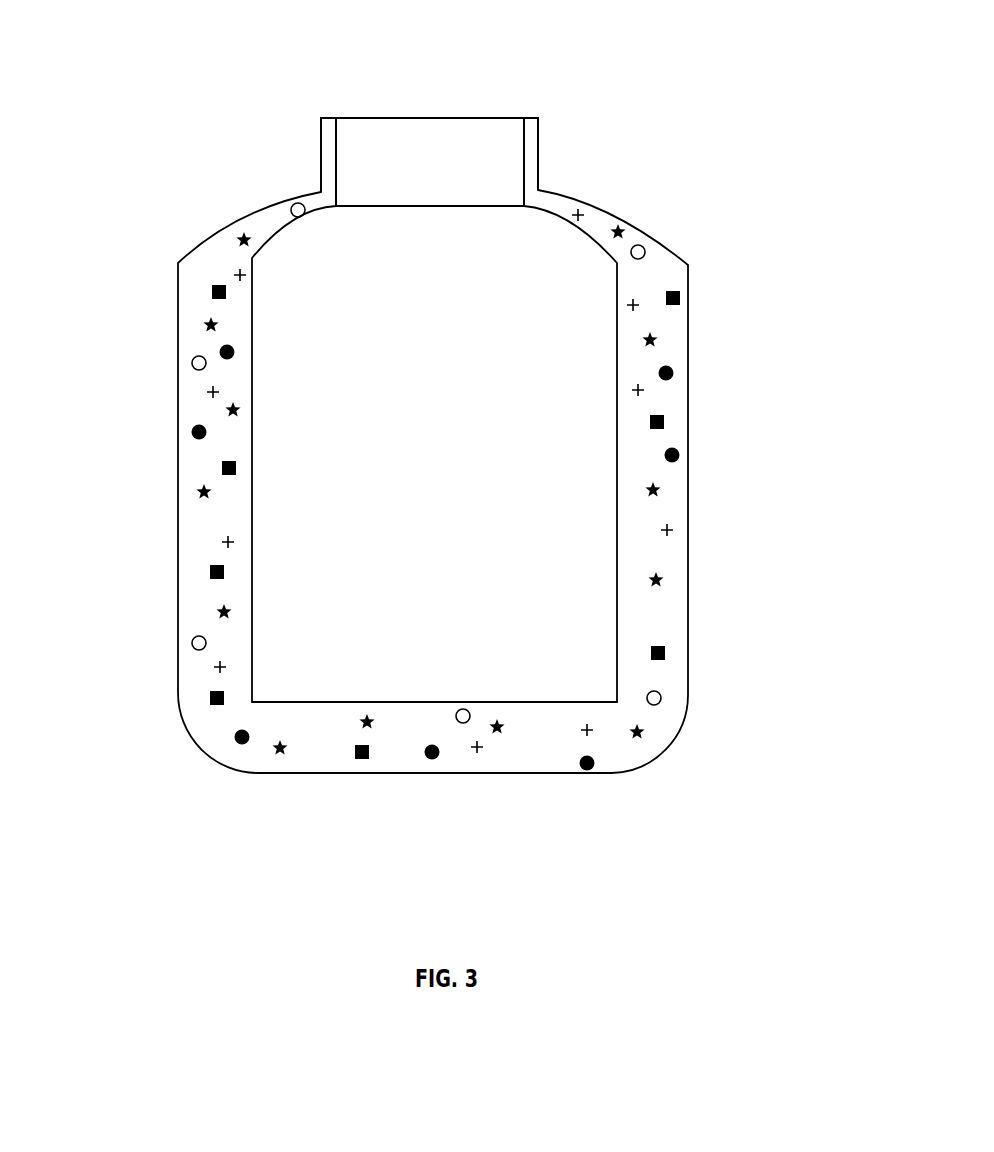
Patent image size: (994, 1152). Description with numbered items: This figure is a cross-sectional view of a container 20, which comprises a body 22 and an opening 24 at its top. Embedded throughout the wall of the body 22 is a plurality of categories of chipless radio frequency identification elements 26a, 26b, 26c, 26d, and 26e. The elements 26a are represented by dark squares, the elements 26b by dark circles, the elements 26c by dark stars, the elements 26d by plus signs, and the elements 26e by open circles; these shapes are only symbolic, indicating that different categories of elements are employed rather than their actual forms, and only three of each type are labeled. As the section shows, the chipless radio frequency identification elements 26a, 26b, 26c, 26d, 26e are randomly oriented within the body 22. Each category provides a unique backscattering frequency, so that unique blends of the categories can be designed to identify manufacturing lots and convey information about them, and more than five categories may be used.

The container 20 is at (685, 247).
The body 22 is at (668, 355).
The opening 24 is at (425, 148).
The chipless radio frequency identification elements 26a is at (210, 293).
The chipless radio frequency identification elements 26b is at (195, 430).
The chipless radio frequency identification elements 26c is at (273, 755).
The chipless radio frequency identification elements 26d is at (228, 267).
The chipless radio frequency identification elements 26e is at (192, 363).